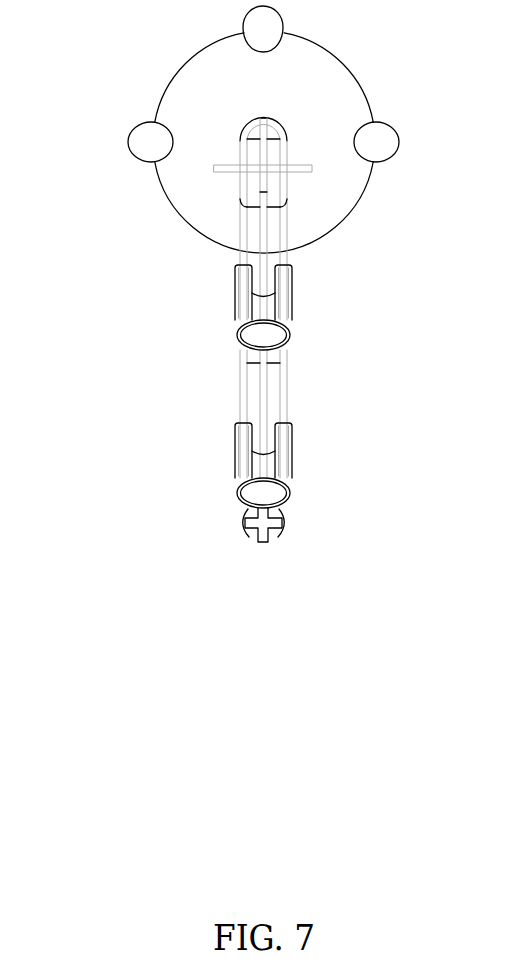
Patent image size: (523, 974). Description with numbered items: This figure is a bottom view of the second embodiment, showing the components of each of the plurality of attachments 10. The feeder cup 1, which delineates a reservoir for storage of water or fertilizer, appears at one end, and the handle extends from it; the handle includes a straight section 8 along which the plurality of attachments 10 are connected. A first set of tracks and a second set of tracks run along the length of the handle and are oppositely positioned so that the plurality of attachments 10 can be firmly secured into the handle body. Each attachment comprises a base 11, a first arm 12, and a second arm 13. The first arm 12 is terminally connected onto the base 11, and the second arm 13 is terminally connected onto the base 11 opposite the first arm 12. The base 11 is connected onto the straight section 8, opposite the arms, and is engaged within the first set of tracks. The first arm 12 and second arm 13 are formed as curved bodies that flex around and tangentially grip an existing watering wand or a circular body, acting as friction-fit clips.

The feeder cup 1 is at (134, 110).
The straight section 8 is at (242, 381).
The plurality of attachments 10 is at (218, 400).
The base 11 is at (277, 355).
The first arm 12 is at (282, 290).
The second arm 13 is at (243, 290).